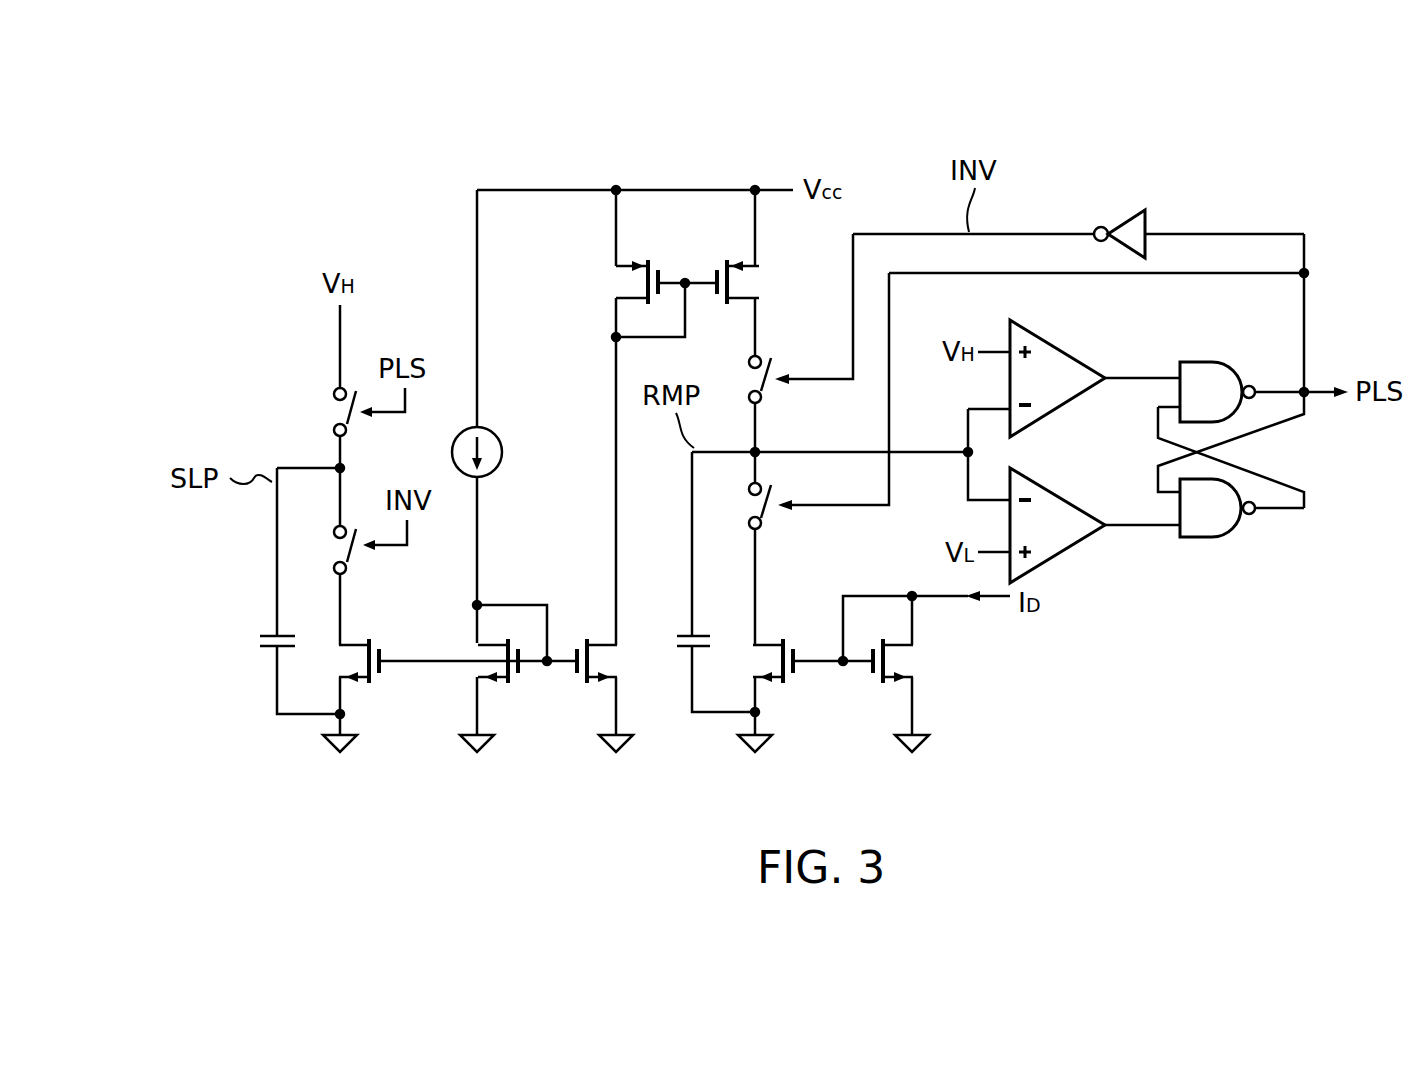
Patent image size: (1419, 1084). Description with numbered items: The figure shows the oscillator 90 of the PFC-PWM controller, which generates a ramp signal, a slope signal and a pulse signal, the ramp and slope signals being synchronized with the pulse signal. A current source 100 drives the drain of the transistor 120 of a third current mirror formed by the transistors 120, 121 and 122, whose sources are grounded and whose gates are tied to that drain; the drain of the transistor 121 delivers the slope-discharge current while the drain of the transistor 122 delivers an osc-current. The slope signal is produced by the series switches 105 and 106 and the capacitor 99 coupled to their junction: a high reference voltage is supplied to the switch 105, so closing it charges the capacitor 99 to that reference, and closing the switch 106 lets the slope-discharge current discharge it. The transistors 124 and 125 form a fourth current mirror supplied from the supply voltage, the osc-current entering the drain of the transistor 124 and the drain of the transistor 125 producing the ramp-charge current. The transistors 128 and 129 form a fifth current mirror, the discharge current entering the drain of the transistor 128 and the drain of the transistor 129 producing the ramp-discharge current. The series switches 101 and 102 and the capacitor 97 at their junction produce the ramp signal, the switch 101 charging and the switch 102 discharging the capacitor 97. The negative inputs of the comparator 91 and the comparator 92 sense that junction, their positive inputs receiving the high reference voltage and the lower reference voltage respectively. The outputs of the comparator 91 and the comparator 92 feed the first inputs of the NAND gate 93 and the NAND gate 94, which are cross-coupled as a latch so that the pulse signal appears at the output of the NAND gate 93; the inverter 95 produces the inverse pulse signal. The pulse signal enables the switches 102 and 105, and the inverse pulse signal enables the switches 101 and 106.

The oscillator 90 is at (1281, 166).
The comparator 91 is at (1072, 405).
The comparator 92 is at (1072, 553).
The NAND gate 93 is at (1205, 355).
The NAND gate 94 is at (1205, 540).
The inverter 95 is at (1124, 208).
The capacitor 97 is at (676, 660).
The capacitor 99 is at (256, 642).
The current source 100 is at (500, 428).
The switch 101 is at (773, 393).
The switch 102 is at (773, 522).
The switch 105 is at (330, 413).
The switch 106 is at (360, 558).
The transistor 120 is at (518, 684).
The transistor 121 is at (378, 686).
The transistor 122 is at (597, 633).
The transistor 124 is at (612, 283).
The transistor 125 is at (748, 292).
The transistor 128 is at (918, 653).
The transistor 129 is at (797, 674).